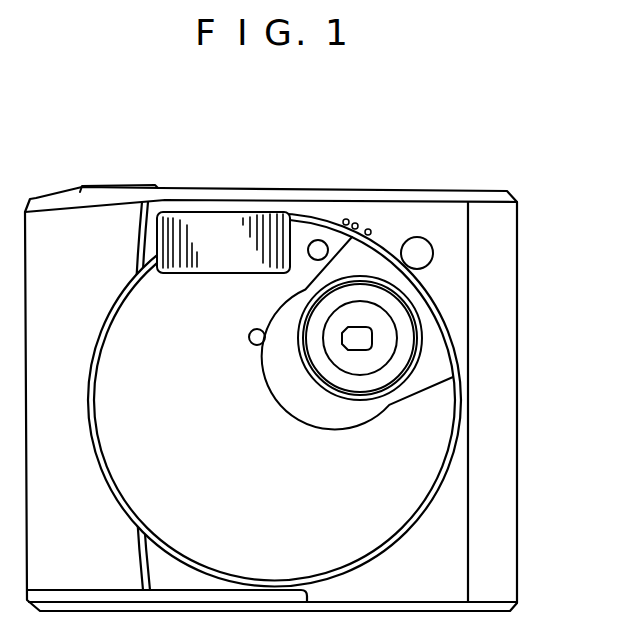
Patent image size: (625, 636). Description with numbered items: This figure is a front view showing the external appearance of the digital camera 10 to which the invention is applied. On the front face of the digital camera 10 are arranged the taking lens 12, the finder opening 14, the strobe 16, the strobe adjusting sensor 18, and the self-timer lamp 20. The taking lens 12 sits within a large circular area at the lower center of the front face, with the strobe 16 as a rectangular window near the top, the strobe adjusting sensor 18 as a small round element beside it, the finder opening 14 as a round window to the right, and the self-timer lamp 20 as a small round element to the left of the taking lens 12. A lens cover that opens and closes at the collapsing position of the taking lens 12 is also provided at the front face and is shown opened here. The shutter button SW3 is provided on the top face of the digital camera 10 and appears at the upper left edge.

The digital camera 10 is at (510, 168).
The taking lens 12 is at (366, 338).
The finder opening 14 is at (423, 253).
The strobe 16 is at (218, 220).
The strobe adjusting sensor 18 is at (320, 240).
The self-timer lamp 20 is at (248, 337).
The shutter button SW3 is at (101, 184).